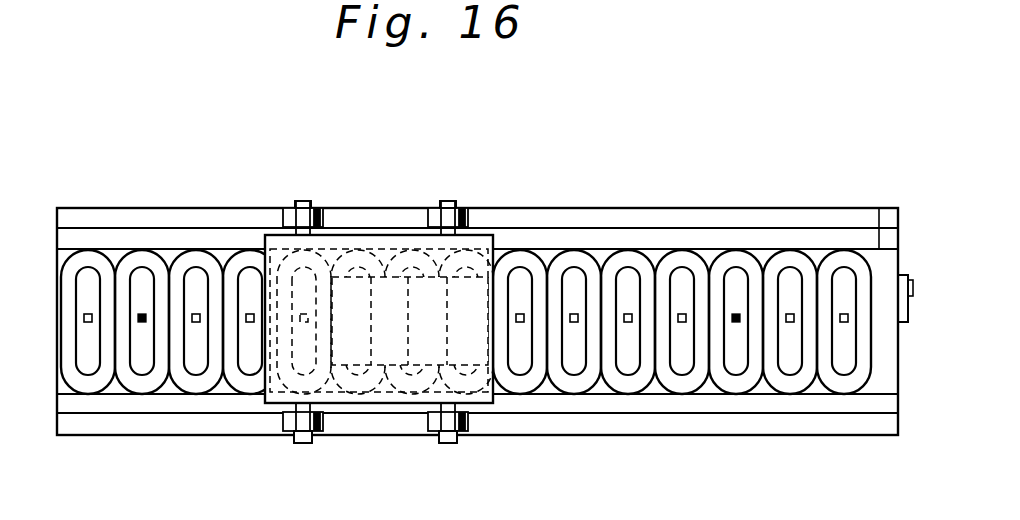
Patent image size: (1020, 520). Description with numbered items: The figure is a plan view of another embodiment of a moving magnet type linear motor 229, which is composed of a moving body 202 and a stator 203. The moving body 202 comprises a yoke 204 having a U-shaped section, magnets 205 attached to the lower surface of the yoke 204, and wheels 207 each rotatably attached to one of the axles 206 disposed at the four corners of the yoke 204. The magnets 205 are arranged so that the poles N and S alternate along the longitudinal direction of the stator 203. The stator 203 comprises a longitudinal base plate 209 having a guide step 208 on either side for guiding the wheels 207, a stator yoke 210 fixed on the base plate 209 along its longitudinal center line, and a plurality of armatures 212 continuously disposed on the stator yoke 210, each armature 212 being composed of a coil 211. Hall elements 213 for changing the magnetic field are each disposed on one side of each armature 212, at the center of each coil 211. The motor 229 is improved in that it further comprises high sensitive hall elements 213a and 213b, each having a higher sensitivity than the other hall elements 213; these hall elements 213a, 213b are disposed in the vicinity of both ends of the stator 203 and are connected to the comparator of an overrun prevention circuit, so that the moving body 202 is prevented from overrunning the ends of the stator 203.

The moving magnet type linear motor 229 is at (799, 183).
The moving body 202 is at (370, 235).
The stator 203 is at (158, 205).
The yoke 204 is at (483, 233).
The magnets 205 is at (494, 288).
The axles 206 is at (304, 201).
The wheels 207 is at (288, 218).
The guide step 208 is at (598, 211).
The base plate 209 is at (104, 238).
The stator yoke 210 is at (879, 248).
The coil 211 is at (787, 380).
The armatures 212 is at (678, 248).
The hall elements 213 is at (624, 322).
The high sensitive hall element 213a is at (143, 322).
The high sensitive hall element 213b is at (736, 313).